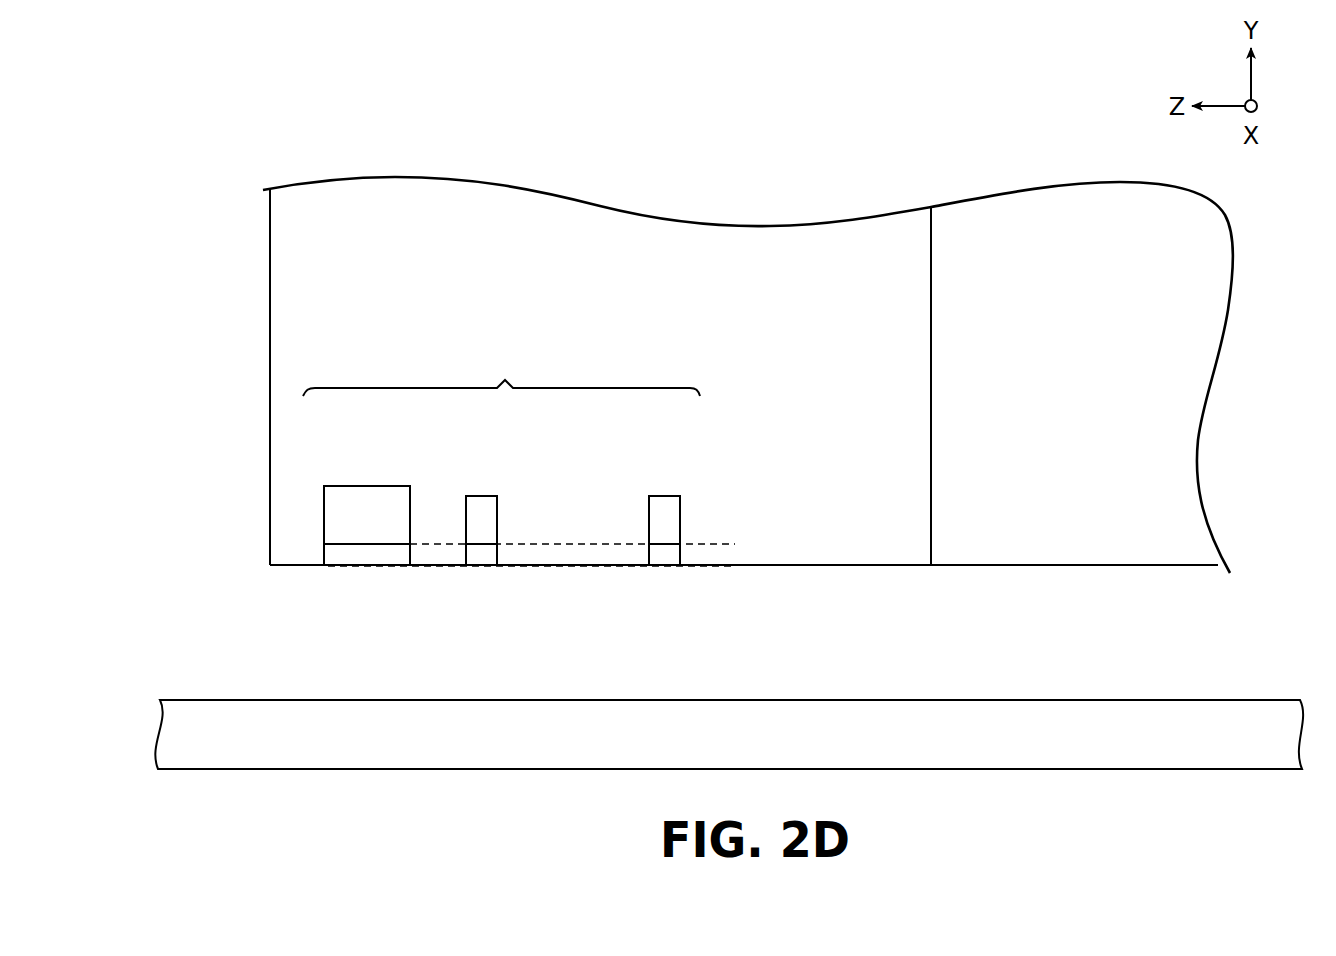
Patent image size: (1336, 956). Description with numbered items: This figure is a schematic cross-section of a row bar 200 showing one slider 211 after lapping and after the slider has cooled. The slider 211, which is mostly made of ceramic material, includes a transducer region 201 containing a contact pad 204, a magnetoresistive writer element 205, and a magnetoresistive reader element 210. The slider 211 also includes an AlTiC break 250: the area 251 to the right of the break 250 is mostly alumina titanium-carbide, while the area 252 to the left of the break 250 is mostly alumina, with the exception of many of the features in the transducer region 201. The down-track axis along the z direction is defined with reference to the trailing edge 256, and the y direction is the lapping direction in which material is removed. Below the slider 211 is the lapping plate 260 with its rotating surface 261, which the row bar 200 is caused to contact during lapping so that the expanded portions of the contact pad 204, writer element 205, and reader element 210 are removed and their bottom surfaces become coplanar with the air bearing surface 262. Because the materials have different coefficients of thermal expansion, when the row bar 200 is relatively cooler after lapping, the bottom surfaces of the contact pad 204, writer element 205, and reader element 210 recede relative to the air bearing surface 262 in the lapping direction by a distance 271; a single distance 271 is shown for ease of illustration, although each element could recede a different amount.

The row bar 200 is at (257, 114).
The transducer region 201 is at (501, 372).
The contact pad 204 is at (372, 486).
The magnetoresistive writer element 205 is at (481, 496).
The magnetoresistive reader element 210 is at (665, 496).
The slider 211 is at (1199, 281).
The AlTiC break 250 is at (931, 331).
The area to the right of break 251 is at (1100, 384).
The area to the left of break 252 is at (845, 395).
The trailing edge 256 is at (268, 566).
The lapping plate 260 is at (765, 746).
The rotating surface 261 is at (980, 700).
The air bearing surface 262 is at (1093, 567).
The distance 271 is at (708, 563).